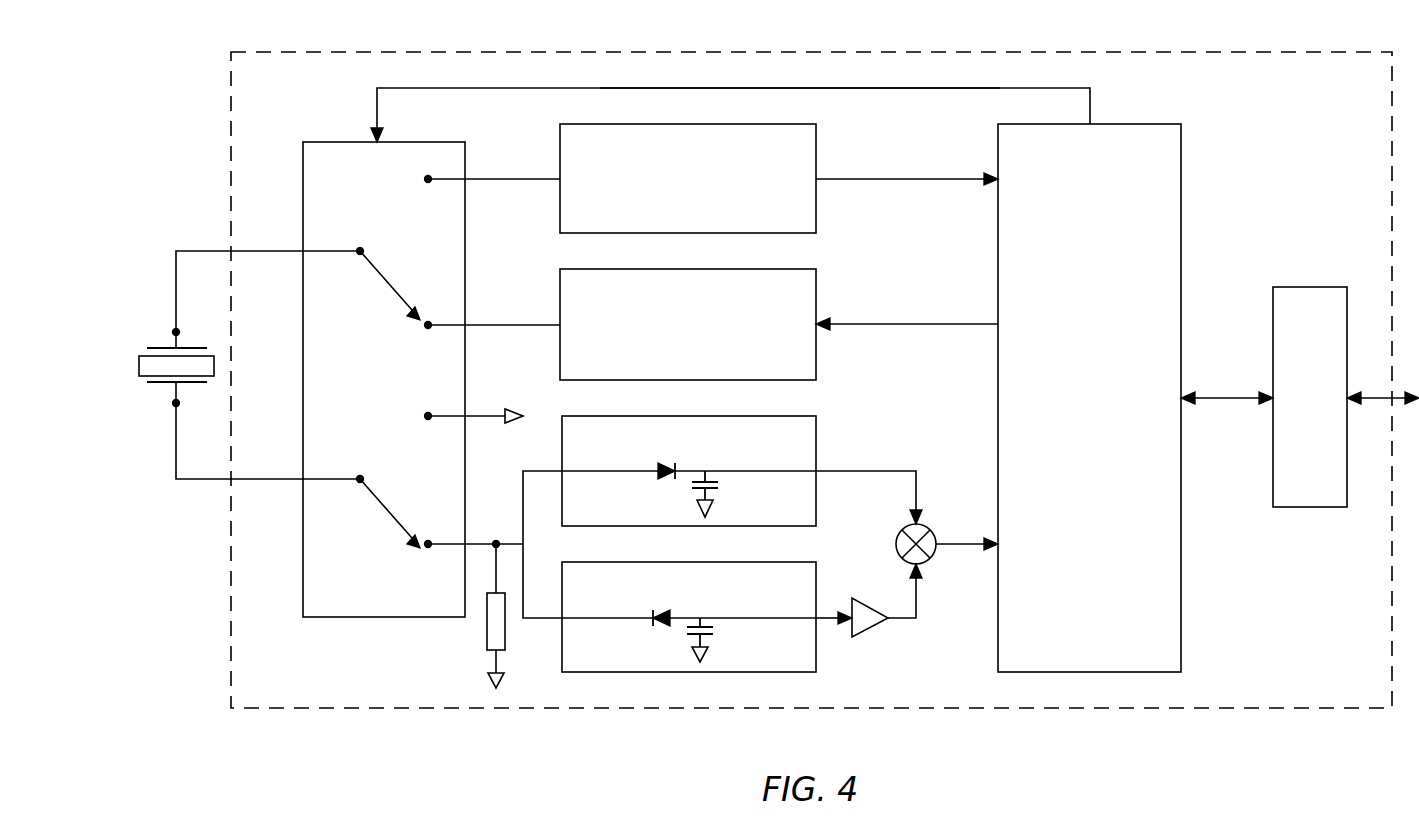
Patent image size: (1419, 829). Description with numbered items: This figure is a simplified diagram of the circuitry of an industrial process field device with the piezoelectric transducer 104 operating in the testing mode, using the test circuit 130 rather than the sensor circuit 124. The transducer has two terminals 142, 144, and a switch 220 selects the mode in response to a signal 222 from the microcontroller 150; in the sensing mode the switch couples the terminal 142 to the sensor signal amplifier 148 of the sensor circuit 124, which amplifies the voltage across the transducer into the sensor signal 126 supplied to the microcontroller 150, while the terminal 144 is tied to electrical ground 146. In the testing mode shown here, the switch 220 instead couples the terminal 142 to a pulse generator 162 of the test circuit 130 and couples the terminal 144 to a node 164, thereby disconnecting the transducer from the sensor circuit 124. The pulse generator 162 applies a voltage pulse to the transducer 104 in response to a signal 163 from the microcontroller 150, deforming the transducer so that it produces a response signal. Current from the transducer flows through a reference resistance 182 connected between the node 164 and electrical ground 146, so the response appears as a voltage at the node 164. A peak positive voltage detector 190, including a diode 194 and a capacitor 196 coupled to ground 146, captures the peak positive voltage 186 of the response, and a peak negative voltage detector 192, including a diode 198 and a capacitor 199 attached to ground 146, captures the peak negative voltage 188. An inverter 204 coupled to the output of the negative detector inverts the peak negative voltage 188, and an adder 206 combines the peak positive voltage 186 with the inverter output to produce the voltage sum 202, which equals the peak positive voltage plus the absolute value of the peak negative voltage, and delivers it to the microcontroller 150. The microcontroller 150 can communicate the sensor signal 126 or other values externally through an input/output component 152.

The piezoelectric transducer 104 is at (139, 366).
The sensor circuit 124 is at (793, 96).
The sensor signal 126 is at (915, 182).
The test circuit 130 is at (913, 692).
The terminal 142 is at (174, 332).
The terminal 144 is at (174, 403).
The electrical ground 146 is at (510, 409).
The sensor signal amplifier 148 is at (570, 146).
The microcontroller 150 is at (1172, 186).
The input/output component 152 is at (1320, 502).
The pulse generator 162 is at (570, 291).
The signal 163 is at (923, 322).
The node 164 is at (496, 540).
The reference resistance 182 is at (490, 630).
The peak positive voltage 186 is at (887, 471).
The peak negative voltage 188 is at (822, 613).
The peak positive voltage detector 190 is at (812, 424).
The peak negative voltage detector 192 is at (792, 672).
The diode 194 is at (662, 478).
The capacitor 196 is at (718, 489).
The diode 198 is at (665, 630).
The capacitor 199 is at (712, 635).
The voltage sum 202 is at (963, 543).
The inverter 204 is at (870, 625).
The adder 206 is at (896, 541).
The switch 220 is at (318, 152).
The signal 222 is at (868, 90).